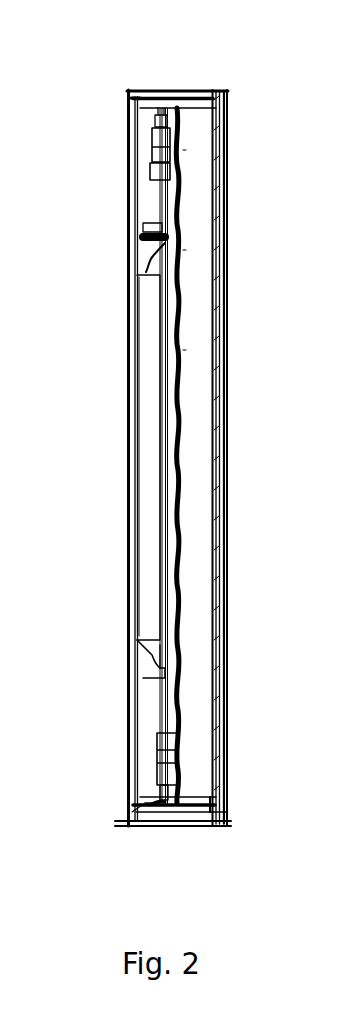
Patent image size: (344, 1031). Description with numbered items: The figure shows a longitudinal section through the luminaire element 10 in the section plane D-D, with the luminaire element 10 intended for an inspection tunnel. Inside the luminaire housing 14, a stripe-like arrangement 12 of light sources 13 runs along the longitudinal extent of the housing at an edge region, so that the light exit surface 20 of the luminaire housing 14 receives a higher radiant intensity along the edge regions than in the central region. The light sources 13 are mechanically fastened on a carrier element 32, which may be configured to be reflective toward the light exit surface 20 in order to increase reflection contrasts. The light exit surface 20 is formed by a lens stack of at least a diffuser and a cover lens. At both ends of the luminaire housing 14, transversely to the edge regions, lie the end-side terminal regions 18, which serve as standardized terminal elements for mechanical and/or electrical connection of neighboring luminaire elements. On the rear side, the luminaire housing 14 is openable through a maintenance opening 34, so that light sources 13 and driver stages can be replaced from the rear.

The luminaire element 10 is at (257, 82).
The stripe-like arrangement of light sources 12 is at (184, 433).
The light source 13 is at (184, 250).
The luminaire housing 14 is at (127, 99).
The end-side terminal region 18 is at (177, 91).
The light exit surface 20 is at (229, 303).
The carrier element 32 is at (176, 534).
The maintenance opening 34 is at (125, 439).